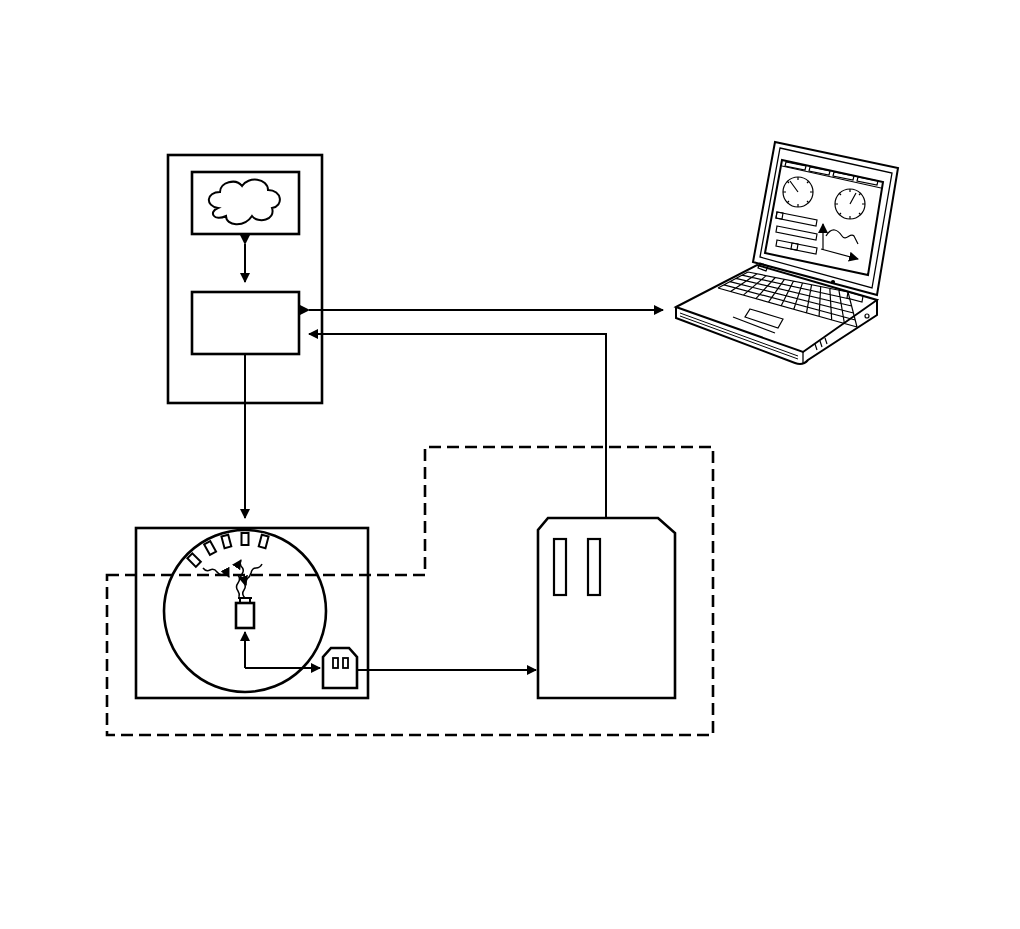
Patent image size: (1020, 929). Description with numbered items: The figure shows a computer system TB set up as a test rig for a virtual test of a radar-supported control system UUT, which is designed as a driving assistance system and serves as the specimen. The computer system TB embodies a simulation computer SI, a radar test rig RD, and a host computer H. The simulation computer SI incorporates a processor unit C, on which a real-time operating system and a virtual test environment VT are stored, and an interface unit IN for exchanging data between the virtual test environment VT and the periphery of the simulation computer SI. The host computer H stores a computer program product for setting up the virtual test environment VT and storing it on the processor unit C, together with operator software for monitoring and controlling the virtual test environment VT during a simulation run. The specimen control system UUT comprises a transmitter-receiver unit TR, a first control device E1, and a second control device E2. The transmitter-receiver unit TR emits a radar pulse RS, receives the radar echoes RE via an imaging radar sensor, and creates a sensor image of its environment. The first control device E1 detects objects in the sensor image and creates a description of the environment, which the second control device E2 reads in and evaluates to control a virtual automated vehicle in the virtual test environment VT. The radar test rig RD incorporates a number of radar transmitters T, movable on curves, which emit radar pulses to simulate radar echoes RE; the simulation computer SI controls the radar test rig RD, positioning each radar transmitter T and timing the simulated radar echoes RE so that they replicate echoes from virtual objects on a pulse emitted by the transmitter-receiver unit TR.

The computer system TB is at (596, 72).
The simulation computer SI is at (244, 155).
The host computer H is at (834, 148).
The virtual test environment VT is at (208, 204).
The processor unit C is at (192, 227).
The interface unit IN is at (192, 320).
The radar test rig RD is at (332, 528).
The radar transmitter T is at (207, 543).
The radar pulse RS is at (238, 575).
The radar echoes RE is at (264, 558).
The transmitter-receiver unit TR is at (236, 617).
The first control device E1 is at (358, 660).
The second control device E2 is at (538, 565).
The radar-supported control system UUT is at (713, 568).